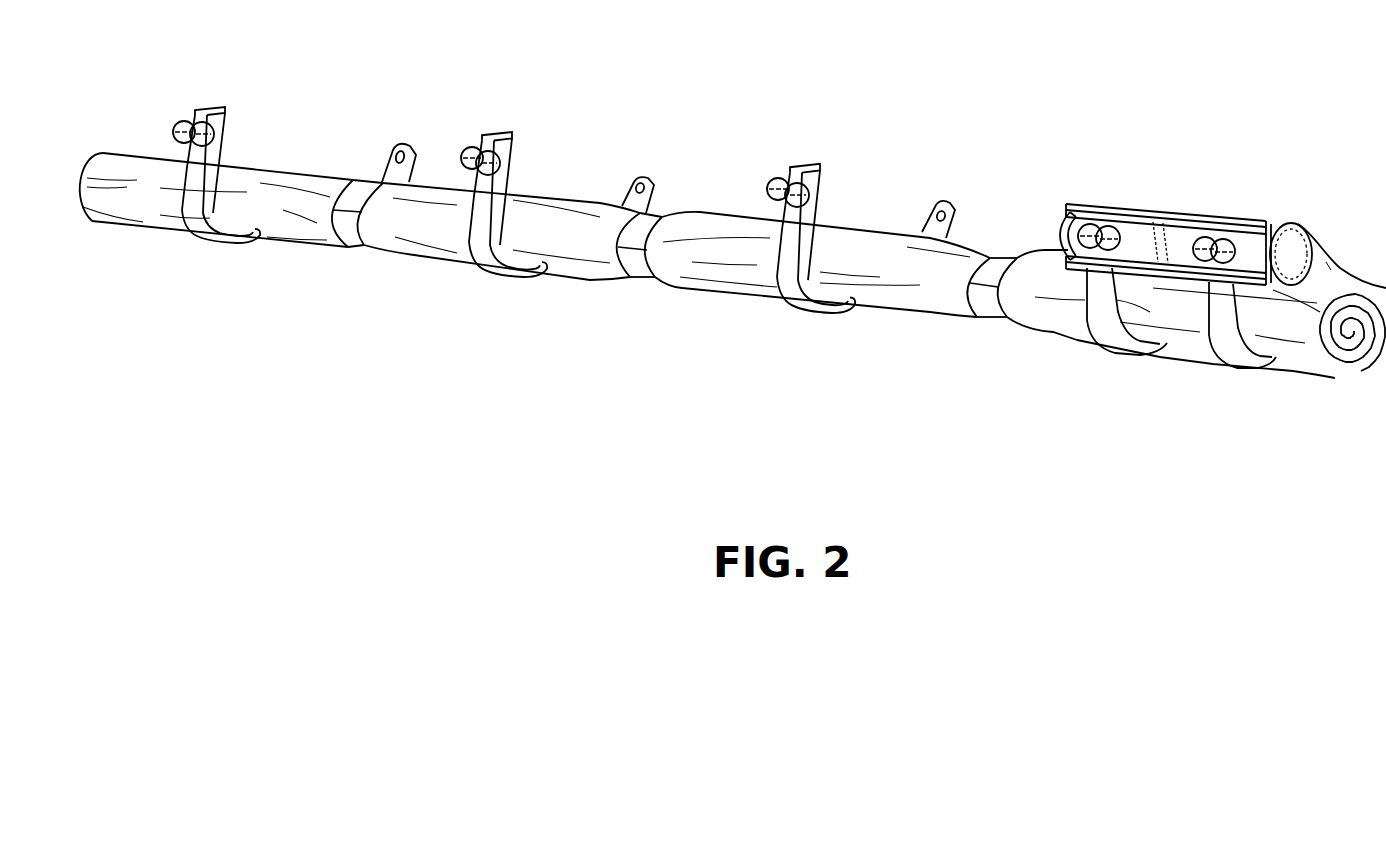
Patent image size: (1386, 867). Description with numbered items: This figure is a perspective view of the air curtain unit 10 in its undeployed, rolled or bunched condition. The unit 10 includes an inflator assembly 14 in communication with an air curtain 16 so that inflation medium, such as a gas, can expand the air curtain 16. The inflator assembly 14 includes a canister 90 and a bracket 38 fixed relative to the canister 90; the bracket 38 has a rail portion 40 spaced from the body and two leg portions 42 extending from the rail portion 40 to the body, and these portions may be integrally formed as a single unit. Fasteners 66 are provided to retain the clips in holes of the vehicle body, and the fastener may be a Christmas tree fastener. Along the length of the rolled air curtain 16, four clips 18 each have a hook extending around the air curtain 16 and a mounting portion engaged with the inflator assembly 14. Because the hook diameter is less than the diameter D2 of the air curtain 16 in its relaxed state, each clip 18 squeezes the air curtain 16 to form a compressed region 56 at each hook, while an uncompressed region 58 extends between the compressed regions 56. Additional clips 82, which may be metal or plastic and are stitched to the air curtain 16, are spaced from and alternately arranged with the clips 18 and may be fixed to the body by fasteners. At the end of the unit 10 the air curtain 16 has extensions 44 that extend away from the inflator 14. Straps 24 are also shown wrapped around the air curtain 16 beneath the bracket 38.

The air curtain unit 10 is at (688, 106).
The inflator assembly 14 is at (1231, 322).
The air curtain 16 is at (536, 213).
The clip 18 is at (197, 225).
The straps 24 is at (1102, 313).
The bracket 38 is at (1160, 228).
The rail portion 40 is at (1131, 230).
The leg portions 42 is at (1066, 220).
The extensions 44 is at (1303, 357).
The compressed region 56 is at (1173, 358).
The uncompressed region 58 is at (720, 302).
The fastener 66 is at (1096, 226).
The clips 82 is at (398, 148).
The canister 90 is at (1328, 257).
The diameter of the air curtain D2 is at (1051, 372).